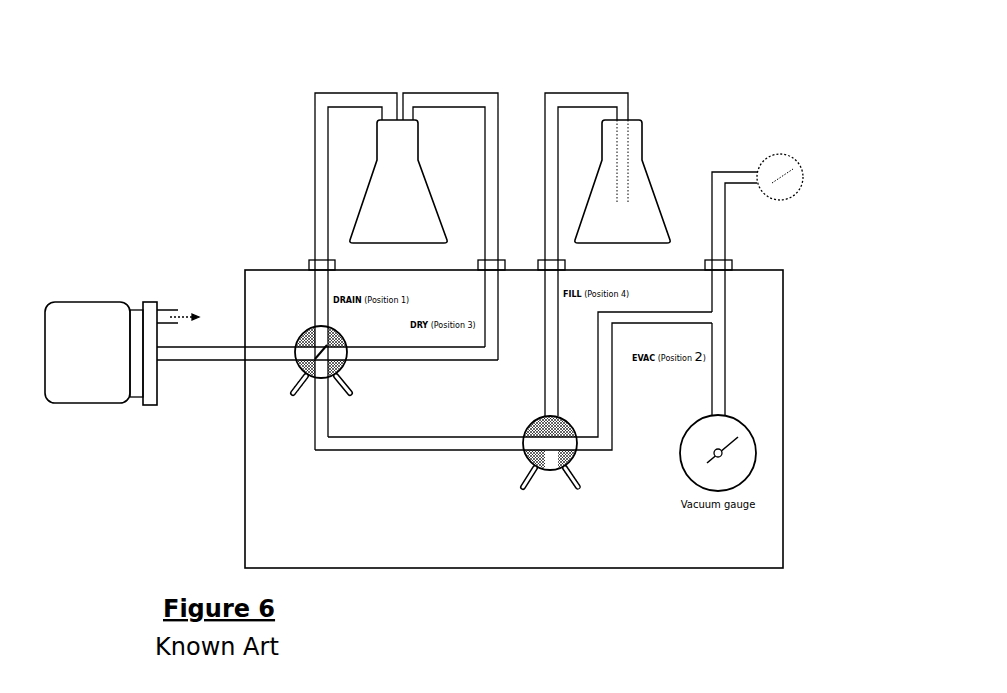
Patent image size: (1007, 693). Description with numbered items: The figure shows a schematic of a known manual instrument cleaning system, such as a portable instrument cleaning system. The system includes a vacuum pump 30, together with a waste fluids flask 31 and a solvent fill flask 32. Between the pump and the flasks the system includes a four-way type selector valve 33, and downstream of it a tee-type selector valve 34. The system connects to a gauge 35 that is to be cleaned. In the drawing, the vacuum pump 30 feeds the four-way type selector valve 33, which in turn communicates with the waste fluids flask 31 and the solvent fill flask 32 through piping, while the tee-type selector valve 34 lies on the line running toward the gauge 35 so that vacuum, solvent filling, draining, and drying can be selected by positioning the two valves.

The vacuum pump 30 is at (102, 327).
The waste liquids flask 31 is at (392, 203).
The solvent fill flask 32 is at (625, 193).
The four-way type selector valve 33 is at (303, 408).
The tee-type selector valve 34 is at (538, 470).
The gauge 35 is at (798, 193).